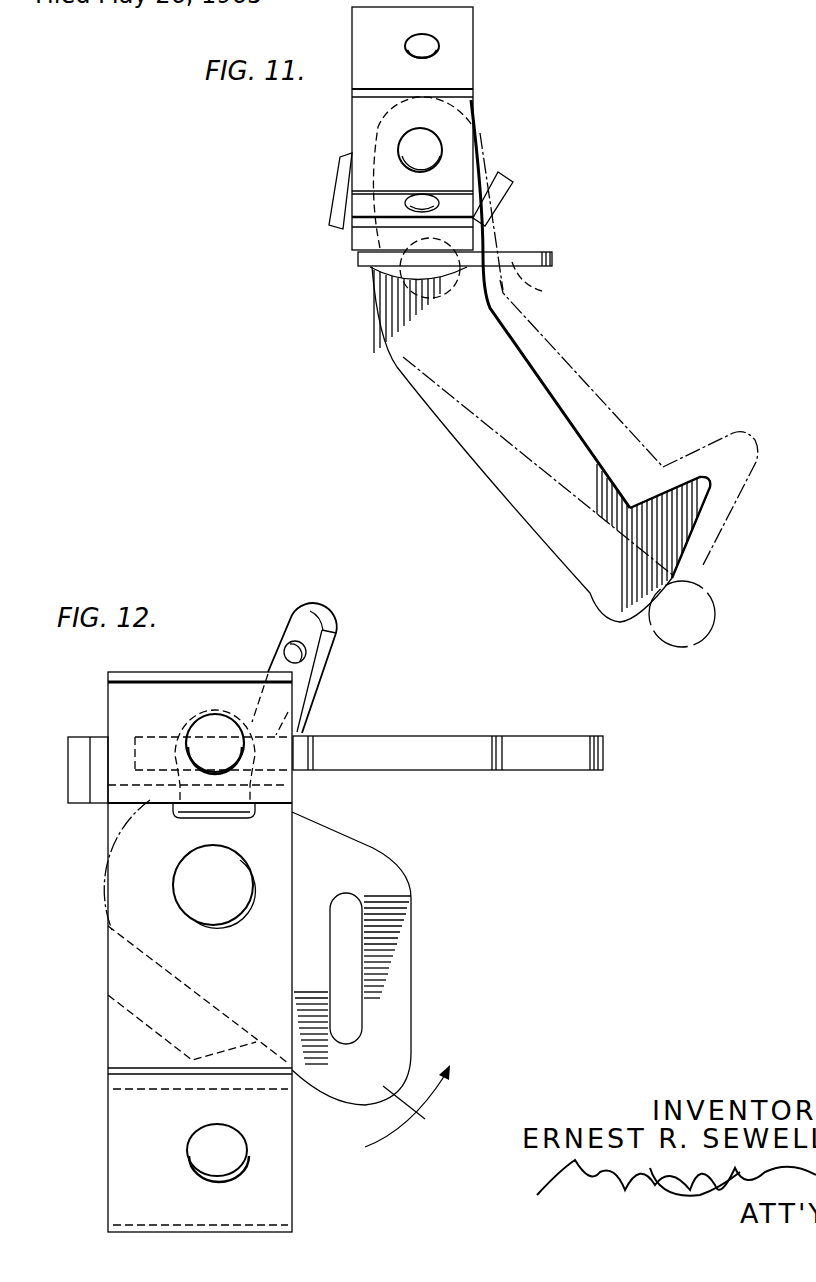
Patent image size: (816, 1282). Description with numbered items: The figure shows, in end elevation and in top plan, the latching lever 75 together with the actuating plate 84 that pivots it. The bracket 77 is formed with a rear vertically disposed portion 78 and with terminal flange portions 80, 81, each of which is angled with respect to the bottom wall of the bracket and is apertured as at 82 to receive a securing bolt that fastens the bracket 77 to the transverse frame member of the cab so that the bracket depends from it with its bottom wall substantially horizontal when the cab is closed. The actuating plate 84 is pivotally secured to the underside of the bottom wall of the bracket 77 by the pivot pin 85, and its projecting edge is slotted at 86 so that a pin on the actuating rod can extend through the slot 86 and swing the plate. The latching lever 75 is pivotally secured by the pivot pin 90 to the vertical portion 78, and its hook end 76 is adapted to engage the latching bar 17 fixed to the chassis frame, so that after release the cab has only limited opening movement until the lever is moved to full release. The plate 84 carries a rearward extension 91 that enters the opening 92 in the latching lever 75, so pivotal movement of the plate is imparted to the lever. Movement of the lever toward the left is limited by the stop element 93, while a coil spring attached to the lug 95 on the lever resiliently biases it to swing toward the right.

In FIG. 11, the latching bar 17 is at (700, 623).
In FIG. 11, the latching lever 75 is at (542, 383).
In FIG. 12, the latching lever 75 is at (432, 726).
In FIG. 11, the hook end 76 is at (688, 487).
In FIG. 12, the hook end 76 is at (550, 743).
In FIG. 11, the bracket 77 is at (345, 135).
In FIG. 12, the bracket 77 is at (98, 1020).
In FIG. 11, the rear vertically disposed portion 78 is at (365, 111).
In FIG. 12, the rear vertically disposed portion 78 is at (123, 807).
In FIG. 11, the terminal flange portion 80 is at (363, 208).
In FIG. 12, the terminal flange portion 80 is at (125, 1123).
In FIG. 11, the terminal flange portion 81 is at (362, 30).
In FIG. 12, the terminal flange portion 81 is at (125, 690).
In FIG. 11, the aperture 82 is at (440, 48).
In FIG. 12, the aperture 82 is at (221, 720).
In FIG. 11, the actuating plate 84 is at (537, 243).
In FIG. 12, the actuating plate 84 is at (396, 851).
In FIG. 12, the pivot pin 85 is at (185, 910).
In FIG. 11, the slot 86 is at (542, 288).
In FIG. 12, the slot 86 is at (358, 909).
In FIG. 11, the pivot pin 90 is at (430, 150).
In FIG. 12, the pivot pin 90 is at (183, 712).
In FIG. 12, the extension 91 is at (168, 722).
In FIG. 11, the opening 92 is at (420, 281).
In FIG. 11, the stop element 93 is at (342, 205).
In FIG. 12, the stop element 93 is at (80, 750).
In FIG. 11, the lug 95 is at (500, 178).
In FIG. 12, the lug 95 is at (304, 614).